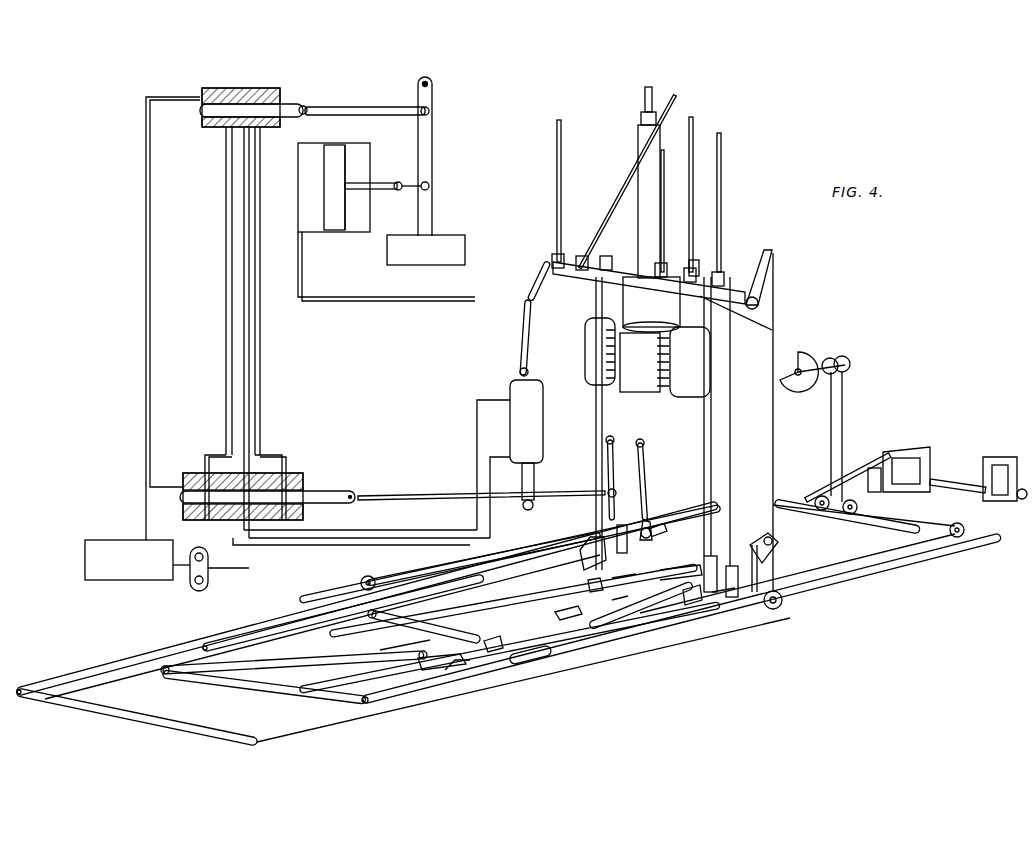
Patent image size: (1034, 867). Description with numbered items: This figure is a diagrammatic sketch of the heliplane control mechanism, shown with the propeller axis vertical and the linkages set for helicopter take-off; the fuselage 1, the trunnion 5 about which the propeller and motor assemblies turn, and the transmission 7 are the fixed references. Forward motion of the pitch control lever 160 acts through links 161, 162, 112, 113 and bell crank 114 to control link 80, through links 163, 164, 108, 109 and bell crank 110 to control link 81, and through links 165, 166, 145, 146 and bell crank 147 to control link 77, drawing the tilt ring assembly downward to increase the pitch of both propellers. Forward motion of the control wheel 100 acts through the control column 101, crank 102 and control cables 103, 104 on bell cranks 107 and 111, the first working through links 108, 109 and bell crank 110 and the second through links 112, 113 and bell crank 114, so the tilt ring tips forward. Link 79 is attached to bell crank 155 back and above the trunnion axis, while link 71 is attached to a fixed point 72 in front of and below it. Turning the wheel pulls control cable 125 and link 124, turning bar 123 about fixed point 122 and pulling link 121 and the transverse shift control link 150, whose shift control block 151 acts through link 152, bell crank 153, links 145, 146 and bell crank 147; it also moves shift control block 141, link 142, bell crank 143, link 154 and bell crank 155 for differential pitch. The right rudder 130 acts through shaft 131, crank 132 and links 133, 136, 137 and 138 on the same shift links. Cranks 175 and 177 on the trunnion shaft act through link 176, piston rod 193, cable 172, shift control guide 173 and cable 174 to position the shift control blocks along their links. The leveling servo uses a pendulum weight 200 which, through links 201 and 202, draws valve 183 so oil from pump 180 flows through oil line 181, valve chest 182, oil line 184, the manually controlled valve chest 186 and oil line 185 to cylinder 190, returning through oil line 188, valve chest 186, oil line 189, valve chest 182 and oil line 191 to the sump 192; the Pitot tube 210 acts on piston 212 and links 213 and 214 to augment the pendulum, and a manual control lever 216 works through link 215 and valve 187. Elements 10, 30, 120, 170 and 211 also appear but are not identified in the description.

The fuselage 1 is at (712, 356).
The trunnion 5 is at (760, 303).
The transmission 7 is at (705, 300).
The spindle 10 is at (645, 98).
The spindle body 30 is at (641, 120).
The link 71 is at (721, 154).
The fixed point 72 is at (772, 320).
The control link 77 is at (693, 190).
The link 79 is at (664, 216).
The control link 80 is at (557, 145).
The control link 81 is at (620, 196).
The control wheel 100 is at (805, 352).
The control column 101 is at (843, 430).
The crank 102 is at (790, 498).
The control cables 103 is at (645, 562).
The control cable 104 is at (620, 605).
The bell crank 107 is at (596, 572).
The link 108 is at (620, 566).
The link 109 is at (596, 398).
The bell crank 110 is at (608, 258).
The bell crank 111 is at (560, 572).
The control link 112 is at (590, 542).
The control link 113 is at (598, 302).
The bell crank 114 is at (560, 256).
The platform rail 120 is at (900, 552).
The link 121 is at (348, 712).
The fixed point 122 is at (140, 716).
The bar 123 is at (86, 712).
The link 124 is at (142, 664).
The control cable 125 is at (831, 422).
The right rudder 130 is at (983, 462).
The shaft 131 is at (958, 492).
The crank 132 is at (905, 492).
The link 133 is at (858, 468).
The link 136 is at (348, 612).
The link 137 is at (218, 676).
The link 138 is at (266, 684).
The shift control block 141 is at (428, 660).
The link 142 is at (458, 672).
The bell crank 143 is at (662, 600).
The link 145 is at (730, 598).
The link 146 is at (711, 380).
The bell crank 147 is at (722, 272).
The transverse shift control link 150 is at (490, 654).
The shift control block 151 is at (530, 668).
The link 152 is at (590, 590).
The bell crank 153 is at (690, 606).
The link 154 is at (730, 410).
The bell crank 155 is at (700, 262).
The pitch control lever 160 is at (645, 445).
The link 161 is at (650, 520).
The link 162 is at (617, 532).
The link 163 is at (650, 528).
The link 164 is at (660, 526).
The link 165 is at (778, 542).
The link 166 is at (755, 538).
The link 170 is at (398, 660).
The cable 172 is at (440, 560).
The shift control guide 173 is at (570, 620).
The cable 174 is at (782, 608).
The crank 175 is at (775, 280).
The link 176 is at (524, 340).
The crank 177 is at (530, 292).
The pump 180 is at (210, 583).
The oil line 181 is at (232, 250).
The valve chest 182 is at (262, 88).
The valve 183 is at (303, 104).
The oil line 184 is at (244, 320).
The oil line 185 is at (322, 545).
The manually controlled valve chest 186 is at (292, 473).
The valve 187 is at (340, 491).
The oil line 188 is at (510, 420).
The oil line 189 is at (260, 320).
The cylinder 190 is at (522, 458).
The oil line 191 is at (146, 278).
The sump 192 is at (122, 540).
The piston rod 193 is at (518, 370).
The pendulum weight 200 is at (446, 235).
The link 201 is at (434, 140).
The link 202 is at (372, 107).
The Pitot tube 210 is at (447, 301).
The frame 211 is at (316, 234).
The piston 212 is at (350, 162).
The link 213 is at (386, 183).
The link 214 is at (410, 190).
The link 215 is at (400, 496).
The manual control lever 216 is at (606, 450).